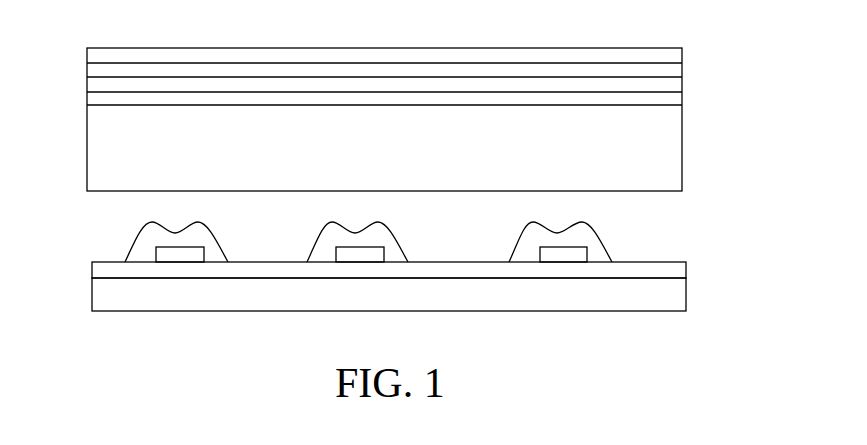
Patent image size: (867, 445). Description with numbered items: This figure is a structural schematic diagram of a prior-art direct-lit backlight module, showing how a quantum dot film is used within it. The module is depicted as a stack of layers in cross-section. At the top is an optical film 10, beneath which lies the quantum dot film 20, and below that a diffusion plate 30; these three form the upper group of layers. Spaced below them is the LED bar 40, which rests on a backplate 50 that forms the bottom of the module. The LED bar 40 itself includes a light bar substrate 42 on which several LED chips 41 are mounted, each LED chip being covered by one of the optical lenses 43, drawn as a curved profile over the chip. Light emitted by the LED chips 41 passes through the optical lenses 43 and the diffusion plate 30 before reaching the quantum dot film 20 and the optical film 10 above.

The optical film 10 is at (687, 48).
The quantum dot film 20 is at (122, 98).
The diffusion plate 30 is at (122, 146).
The LED bar 40 is at (444, 248).
The LED chips 41 is at (573, 253).
The light bar substrate 42 is at (670, 270).
The optical lenses 43 is at (587, 232).
The backplate 50 is at (127, 292).